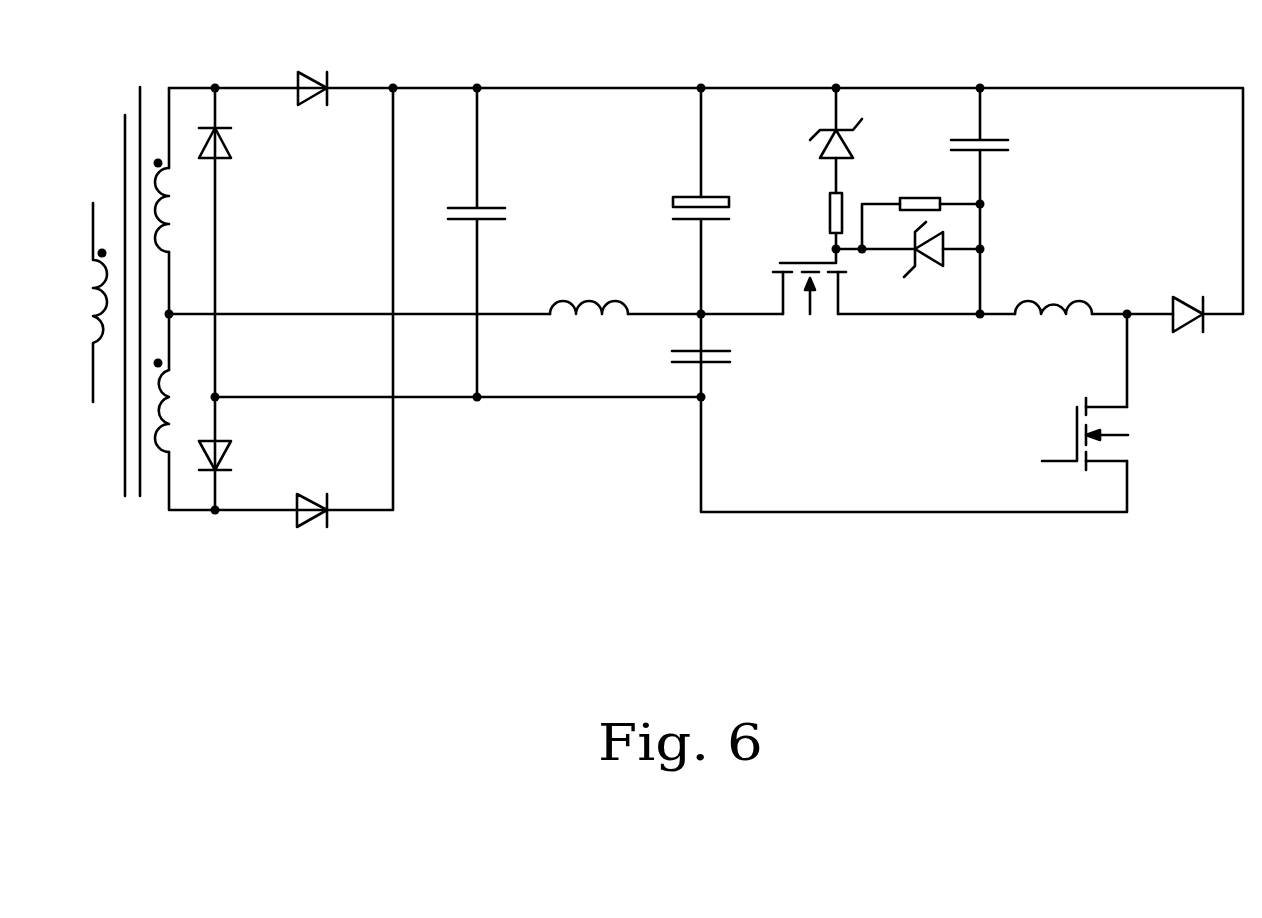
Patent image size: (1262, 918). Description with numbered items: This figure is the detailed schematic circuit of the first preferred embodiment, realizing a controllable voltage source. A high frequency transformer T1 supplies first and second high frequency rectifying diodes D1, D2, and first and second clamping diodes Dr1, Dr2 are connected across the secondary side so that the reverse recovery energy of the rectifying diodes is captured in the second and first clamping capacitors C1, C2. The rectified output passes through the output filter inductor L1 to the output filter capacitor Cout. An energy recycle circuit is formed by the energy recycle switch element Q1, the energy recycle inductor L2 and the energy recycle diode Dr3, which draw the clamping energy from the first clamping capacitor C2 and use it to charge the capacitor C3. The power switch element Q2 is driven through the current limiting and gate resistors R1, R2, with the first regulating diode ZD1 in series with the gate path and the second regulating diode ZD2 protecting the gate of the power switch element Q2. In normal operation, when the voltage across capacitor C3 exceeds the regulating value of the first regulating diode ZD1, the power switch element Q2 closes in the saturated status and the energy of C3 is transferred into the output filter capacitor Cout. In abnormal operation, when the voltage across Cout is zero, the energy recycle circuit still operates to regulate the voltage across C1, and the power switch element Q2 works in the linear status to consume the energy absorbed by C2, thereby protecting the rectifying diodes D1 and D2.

The high frequency transformer T1 is at (131, 270).
The first high frequency rectifying diode D1 is at (314, 64).
The second high frequency rectifying diode D2 is at (312, 490).
The first clamping diode Dr1 is at (230, 166).
The second clamping diode Dr2 is at (233, 414).
The energy recycle diode Dr3 is at (1193, 336).
The second clamping capacitor C1 is at (495, 242).
The first clamping capacitor C2 is at (711, 378).
The capacitor C3 is at (999, 201).
The output filter capacitor Cout is at (669, 201).
The output filter inductor L1 is at (589, 329).
The energy recycle inductor L2 is at (1053, 287).
The current limiting resistor R1 is at (818, 203).
The gate resistor R2 is at (920, 184).
The first regulating diode ZD1 is at (836, 103).
The second regulating diode ZD2 is at (933, 264).
The energy recycle switch element Q1 is at (1102, 434).
The power switch element Q2 is at (809, 303).